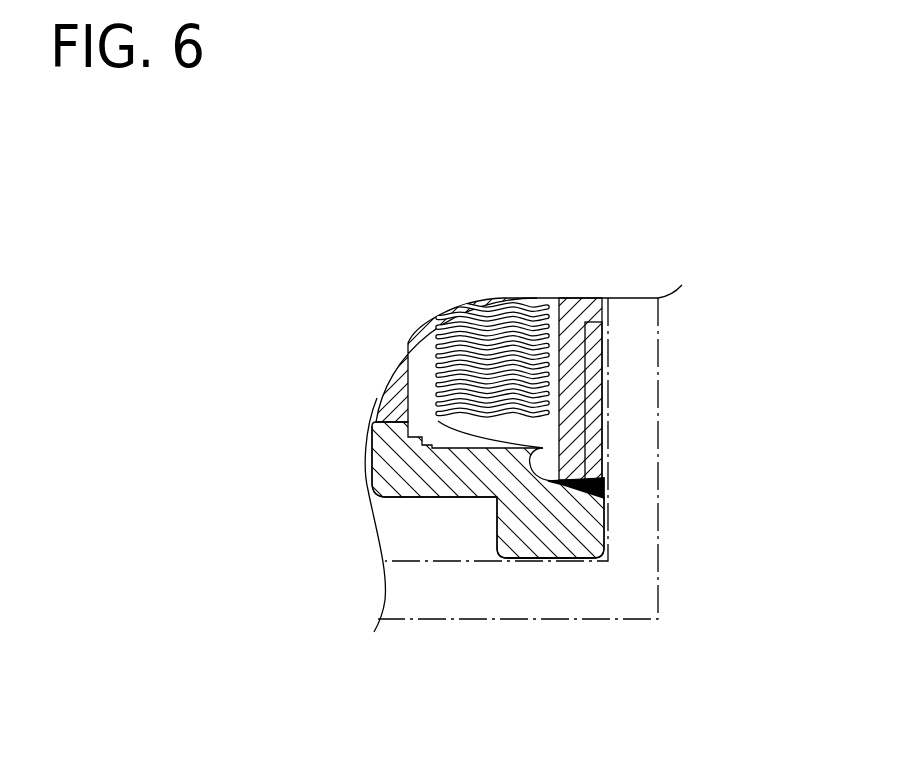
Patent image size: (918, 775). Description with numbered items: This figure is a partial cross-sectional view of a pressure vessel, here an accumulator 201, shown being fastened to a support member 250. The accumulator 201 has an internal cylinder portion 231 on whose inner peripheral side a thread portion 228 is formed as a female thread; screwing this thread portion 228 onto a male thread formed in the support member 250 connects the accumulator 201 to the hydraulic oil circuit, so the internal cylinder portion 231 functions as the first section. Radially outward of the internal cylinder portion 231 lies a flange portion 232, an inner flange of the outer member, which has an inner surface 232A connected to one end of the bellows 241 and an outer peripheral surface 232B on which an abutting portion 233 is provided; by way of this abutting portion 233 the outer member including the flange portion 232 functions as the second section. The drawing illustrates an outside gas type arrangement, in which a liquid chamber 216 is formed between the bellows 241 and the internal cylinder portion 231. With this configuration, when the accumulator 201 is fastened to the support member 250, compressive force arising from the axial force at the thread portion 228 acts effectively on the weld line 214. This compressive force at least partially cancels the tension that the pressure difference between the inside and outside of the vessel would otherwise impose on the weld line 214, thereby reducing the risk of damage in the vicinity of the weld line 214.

The accumulator 201 is at (573, 99).
The weld line 214 is at (605, 488).
The liquid chamber 216 is at (543, 432).
The thread portion 228 is at (597, 362).
The internal cylinder portion 231 is at (572, 312).
The flange portion 232 is at (203, 395).
The inner surface 232A is at (376, 422).
The outer peripheral surface 232B is at (497, 500).
The abutting portion 233 is at (558, 562).
The bellows 241 is at (545, 366).
The support member 250 is at (463, 595).